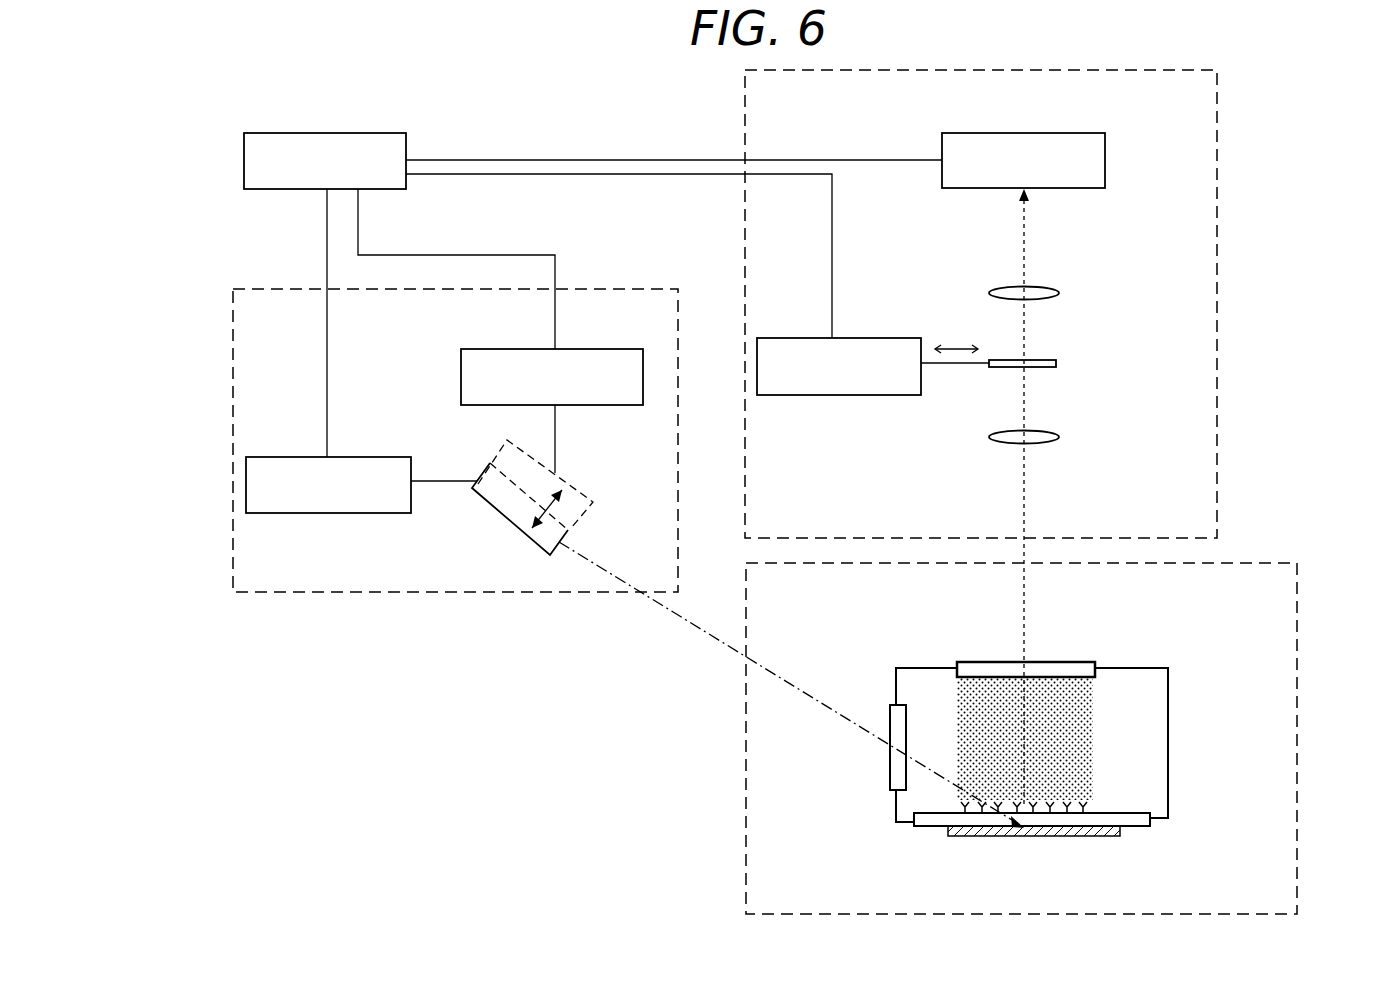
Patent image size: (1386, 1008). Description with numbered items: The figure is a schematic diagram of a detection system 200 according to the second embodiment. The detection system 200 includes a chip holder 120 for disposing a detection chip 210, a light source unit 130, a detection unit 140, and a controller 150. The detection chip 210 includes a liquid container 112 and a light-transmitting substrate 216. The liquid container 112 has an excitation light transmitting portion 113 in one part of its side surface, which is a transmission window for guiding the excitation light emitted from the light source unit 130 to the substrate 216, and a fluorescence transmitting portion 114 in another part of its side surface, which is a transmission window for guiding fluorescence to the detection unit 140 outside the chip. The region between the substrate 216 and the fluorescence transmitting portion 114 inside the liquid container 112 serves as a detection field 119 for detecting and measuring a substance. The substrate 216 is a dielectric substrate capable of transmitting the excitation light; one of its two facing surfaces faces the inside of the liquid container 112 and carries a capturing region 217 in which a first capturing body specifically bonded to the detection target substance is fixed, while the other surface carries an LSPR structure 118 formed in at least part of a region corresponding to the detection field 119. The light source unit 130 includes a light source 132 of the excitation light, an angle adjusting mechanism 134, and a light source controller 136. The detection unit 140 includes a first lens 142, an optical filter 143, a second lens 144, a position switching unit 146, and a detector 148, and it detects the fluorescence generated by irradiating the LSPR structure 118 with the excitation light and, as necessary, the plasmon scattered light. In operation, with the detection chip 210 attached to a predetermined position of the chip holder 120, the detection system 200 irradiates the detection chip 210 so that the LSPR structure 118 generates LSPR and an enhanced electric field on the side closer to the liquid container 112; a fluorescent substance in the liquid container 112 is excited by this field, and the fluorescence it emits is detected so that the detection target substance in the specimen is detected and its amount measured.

The detection system 200 is at (192, 100).
The controller 150 is at (362, 133).
The detector 148 is at (1058, 133).
The detection unit 140 is at (1183, 70).
The light source unit 130 is at (457, 592).
The chip holder 120 is at (1272, 563).
The angle adjusting mechanism 134 is at (588, 349).
The light source controller 136 is at (363, 457).
The light source 132 is at (577, 487).
The position switching unit 146 is at (875, 338).
The second lens 144 is at (1055, 293).
The optical filter 143 is at (1056, 363).
The first lens 142 is at (1056, 437).
The detection chip 210 is at (1192, 642).
The fluorescence transmitting portion 114 is at (1075, 662).
The liquid container 112 is at (1137, 703).
The excitation light transmitting portion 113 is at (890, 750).
The detection field 119 is at (1070, 740).
The capturing region 217 is at (1088, 793).
The substrate 216 is at (1157, 828).
The LSPR structure 118 is at (1120, 833).